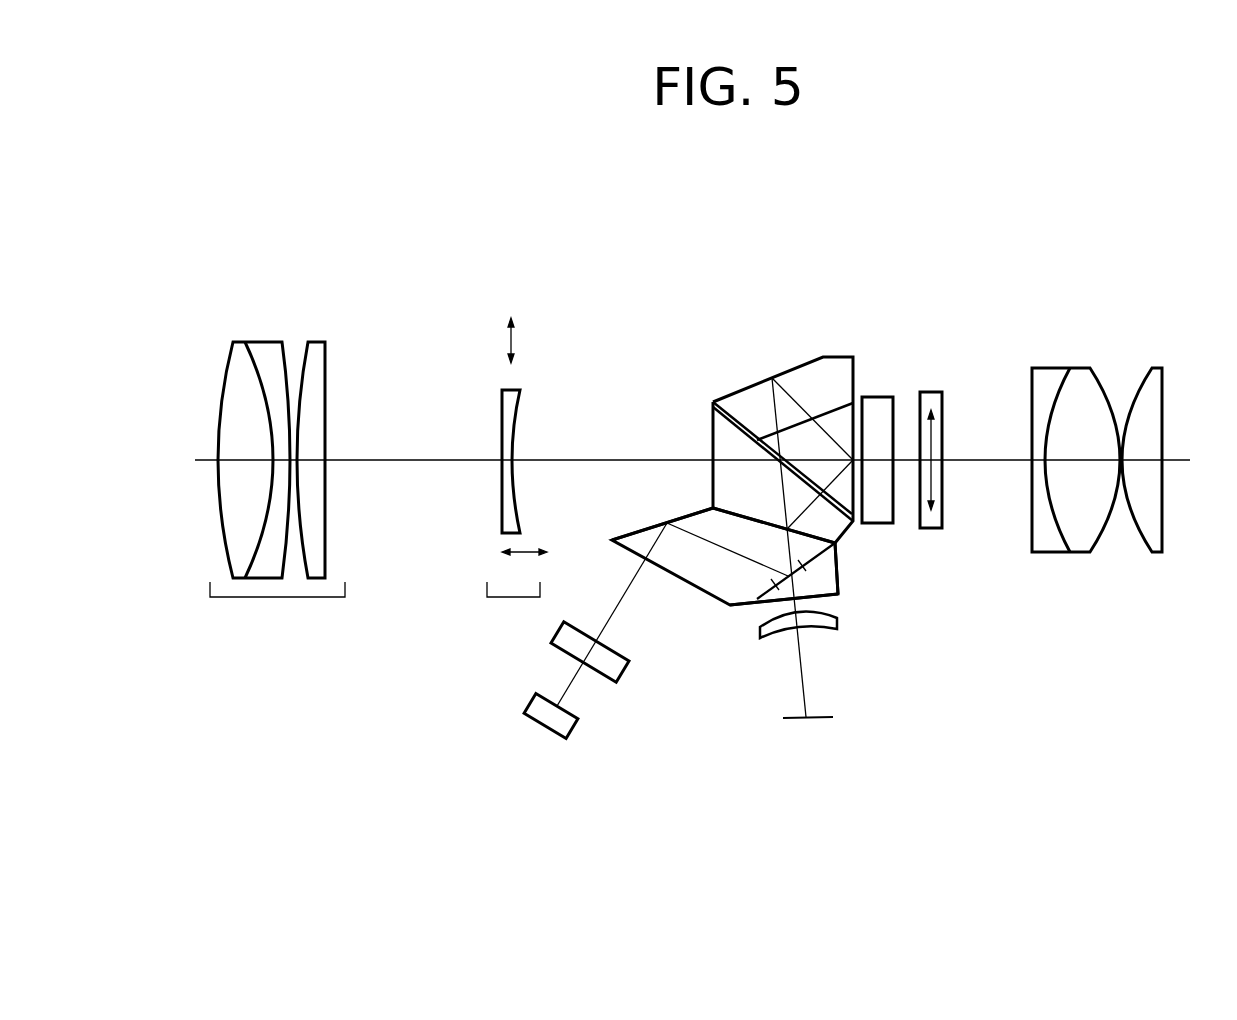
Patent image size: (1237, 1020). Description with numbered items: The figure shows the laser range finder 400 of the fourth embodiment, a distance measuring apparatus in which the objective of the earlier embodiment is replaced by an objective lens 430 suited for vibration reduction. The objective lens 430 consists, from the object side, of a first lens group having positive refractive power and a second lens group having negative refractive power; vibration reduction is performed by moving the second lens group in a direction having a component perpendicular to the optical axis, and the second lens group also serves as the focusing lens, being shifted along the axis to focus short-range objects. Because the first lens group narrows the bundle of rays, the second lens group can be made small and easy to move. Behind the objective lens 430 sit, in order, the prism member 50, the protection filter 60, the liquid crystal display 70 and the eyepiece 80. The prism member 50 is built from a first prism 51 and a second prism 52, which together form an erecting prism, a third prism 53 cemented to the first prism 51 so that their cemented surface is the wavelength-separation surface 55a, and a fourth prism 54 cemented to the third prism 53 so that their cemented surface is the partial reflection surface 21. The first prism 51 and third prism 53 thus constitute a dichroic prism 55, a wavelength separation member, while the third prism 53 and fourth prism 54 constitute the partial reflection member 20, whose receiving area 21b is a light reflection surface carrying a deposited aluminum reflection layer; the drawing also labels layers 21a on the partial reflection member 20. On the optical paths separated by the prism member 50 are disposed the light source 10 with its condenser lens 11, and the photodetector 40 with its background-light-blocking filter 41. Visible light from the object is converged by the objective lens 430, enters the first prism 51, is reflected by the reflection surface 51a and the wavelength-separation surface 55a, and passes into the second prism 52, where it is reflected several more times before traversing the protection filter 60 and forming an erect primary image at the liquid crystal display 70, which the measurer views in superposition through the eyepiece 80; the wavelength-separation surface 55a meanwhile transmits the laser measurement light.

The laser range finder 400 is at (1040, 240).
The objective lens 430 is at (197, 292).
The prism member 50 is at (726, 399).
The first prism 51 is at (713, 477).
The reflection surface 51a is at (732, 424).
The second prism 52 is at (812, 362).
The third prism 53 is at (693, 513).
The fourth prism 54 is at (773, 604).
The dichroic prism 55 is at (699, 567).
The wavelength-separation surface 55a is at (752, 521).
The protection filter 60 is at (873, 395).
The liquid crystal display 70 is at (935, 390).
The eyepiece 80 is at (1025, 357).
The light source 10 is at (820, 720).
The condenser lens 11 is at (838, 628).
The partial reflection member 20 is at (699, 589).
The partial reflection surface 21 is at (874, 579).
The polarizing layer 21a is at (818, 560).
The receiving area 21b is at (792, 577).
The photodetector 40 is at (573, 730).
The background-light-blocking filter 41 is at (623, 674).